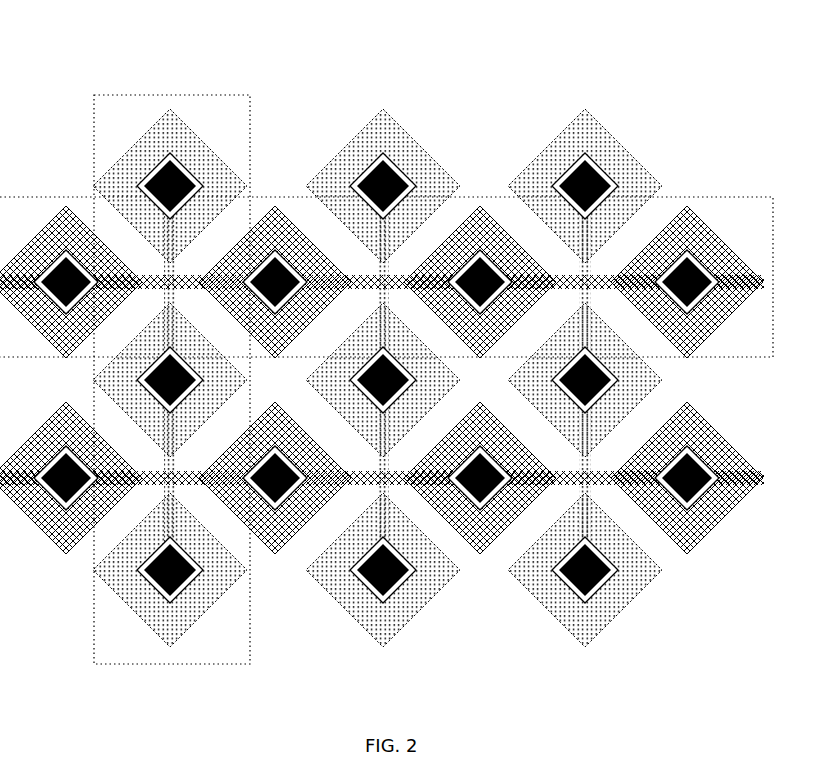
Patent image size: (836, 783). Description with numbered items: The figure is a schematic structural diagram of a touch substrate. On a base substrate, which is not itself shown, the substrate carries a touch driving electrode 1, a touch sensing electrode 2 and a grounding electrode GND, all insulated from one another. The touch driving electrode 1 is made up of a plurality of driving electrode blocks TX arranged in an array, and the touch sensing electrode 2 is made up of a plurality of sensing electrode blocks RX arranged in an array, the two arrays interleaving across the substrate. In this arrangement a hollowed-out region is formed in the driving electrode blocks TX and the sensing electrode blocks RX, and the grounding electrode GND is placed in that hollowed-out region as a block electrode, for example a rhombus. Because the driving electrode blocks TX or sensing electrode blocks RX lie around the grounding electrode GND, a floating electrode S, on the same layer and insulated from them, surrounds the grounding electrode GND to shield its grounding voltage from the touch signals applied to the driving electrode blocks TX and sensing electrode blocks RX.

The touch driving electrode 1 is at (692, 196).
The touch sensing electrode 2 is at (93, 95).
The driving electrode blocks TX is at (727, 436).
The sensing electrode blocks RX is at (415, 135).
The grounding electrode GND is at (425, 612).
The floating electrode S is at (638, 598).